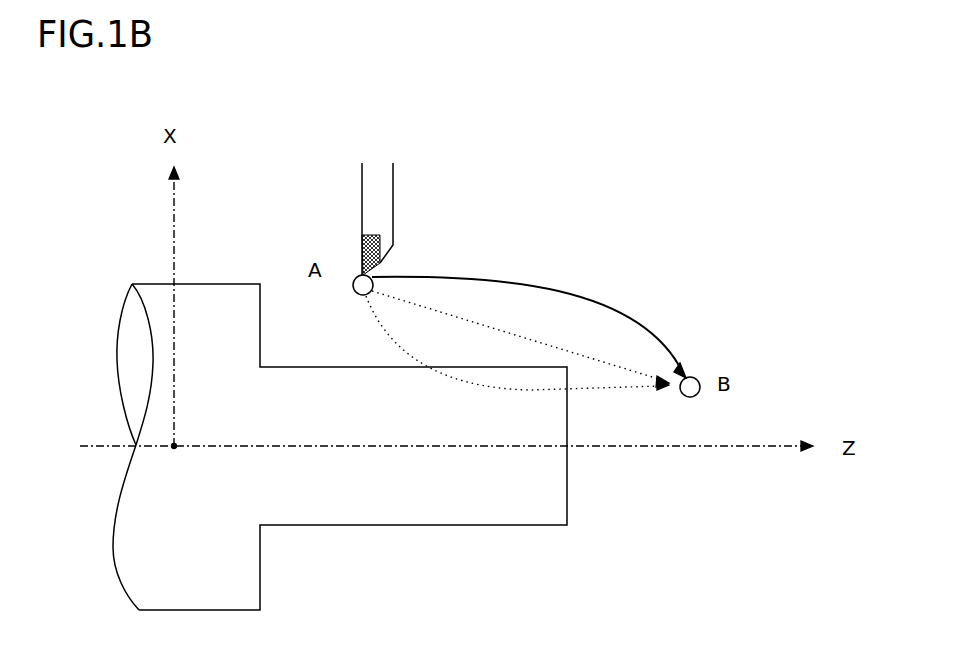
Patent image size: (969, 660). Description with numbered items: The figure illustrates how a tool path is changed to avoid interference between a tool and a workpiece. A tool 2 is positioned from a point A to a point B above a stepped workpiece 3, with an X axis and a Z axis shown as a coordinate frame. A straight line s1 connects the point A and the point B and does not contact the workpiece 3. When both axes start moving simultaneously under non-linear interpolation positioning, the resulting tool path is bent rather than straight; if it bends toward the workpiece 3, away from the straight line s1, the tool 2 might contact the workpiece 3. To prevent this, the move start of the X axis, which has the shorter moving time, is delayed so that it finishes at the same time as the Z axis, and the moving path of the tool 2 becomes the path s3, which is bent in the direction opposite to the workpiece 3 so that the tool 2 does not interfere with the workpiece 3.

The tool 2 is at (392, 183).
The workpiece 3 is at (552, 497).
The straight line s1 is at (513, 327).
The path s3 is at (632, 302).